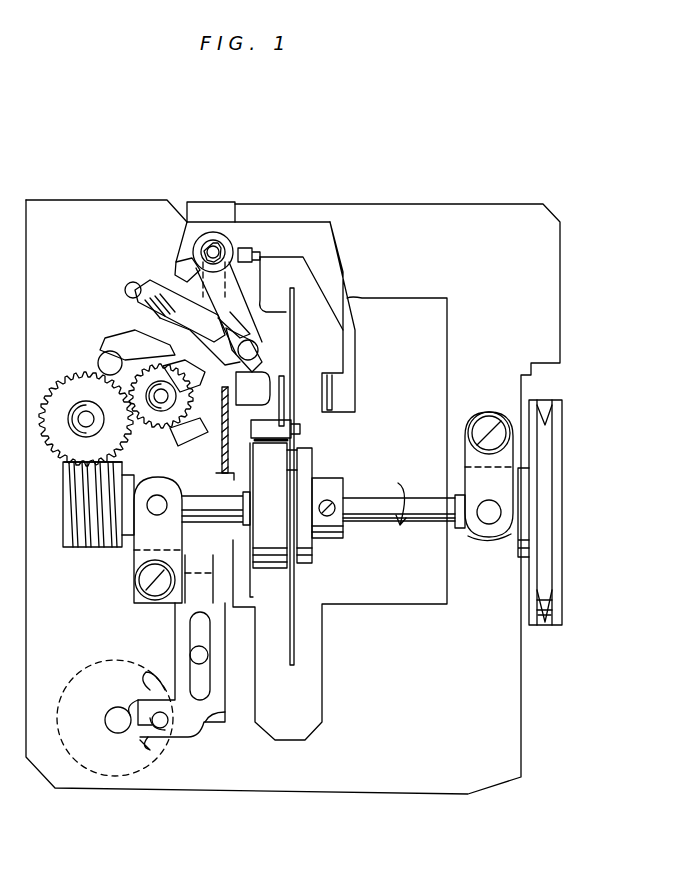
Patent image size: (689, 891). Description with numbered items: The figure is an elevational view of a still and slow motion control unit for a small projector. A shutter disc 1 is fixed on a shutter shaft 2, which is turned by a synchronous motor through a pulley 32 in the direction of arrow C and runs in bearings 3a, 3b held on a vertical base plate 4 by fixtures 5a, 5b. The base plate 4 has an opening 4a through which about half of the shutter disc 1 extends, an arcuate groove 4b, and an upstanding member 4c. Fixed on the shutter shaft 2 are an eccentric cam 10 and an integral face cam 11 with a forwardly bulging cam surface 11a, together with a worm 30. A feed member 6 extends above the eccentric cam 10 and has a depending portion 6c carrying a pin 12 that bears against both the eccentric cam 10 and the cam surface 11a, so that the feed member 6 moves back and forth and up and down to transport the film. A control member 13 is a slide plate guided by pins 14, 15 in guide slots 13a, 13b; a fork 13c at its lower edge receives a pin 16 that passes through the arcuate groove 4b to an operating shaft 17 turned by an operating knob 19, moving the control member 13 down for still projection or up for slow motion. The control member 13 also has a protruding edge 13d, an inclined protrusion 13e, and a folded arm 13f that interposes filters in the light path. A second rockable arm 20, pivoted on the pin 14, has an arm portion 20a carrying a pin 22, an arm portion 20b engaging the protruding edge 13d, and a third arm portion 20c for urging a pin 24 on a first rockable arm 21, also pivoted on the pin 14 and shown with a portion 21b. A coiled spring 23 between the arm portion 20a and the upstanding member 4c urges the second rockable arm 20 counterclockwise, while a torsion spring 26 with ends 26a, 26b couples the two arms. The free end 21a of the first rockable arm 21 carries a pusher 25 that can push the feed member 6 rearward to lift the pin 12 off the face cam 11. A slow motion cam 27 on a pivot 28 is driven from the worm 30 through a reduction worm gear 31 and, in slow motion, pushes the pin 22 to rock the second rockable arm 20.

The shutter disc 1 is at (296, 612).
The shutter shaft 2 is at (371, 503).
The bearing 3a is at (162, 478).
The bearing 3b is at (482, 542).
The base plate 4 is at (470, 204).
The opening 4a is at (430, 306).
The arcuate groove 4b is at (144, 748).
The upstanding member 4c is at (222, 455).
The fixture 5a is at (136, 556).
The fixture 5b is at (465, 478).
The feed member 6 is at (285, 425).
The depending portion 6c is at (288, 438).
The eccentric cam 10 is at (280, 568).
The face cam 11 is at (232, 580).
The cam surface 11a is at (238, 538).
The pin 12 is at (280, 440).
The control member 13 is at (214, 222).
The guide slot 13a is at (220, 238).
The guide slot 13b is at (190, 634).
The fork 13c is at (138, 702).
The protruding edge 13d is at (160, 320).
The inclined protrusion 13e is at (255, 352).
The arm 13f is at (355, 370).
The pin 14 is at (220, 248).
The pin 15 is at (205, 655).
The pin 16 is at (167, 730).
The operating shaft 17 is at (105, 720).
The operating knob 19 is at (84, 668).
The second rockable arm 20 is at (168, 300).
The arm portion 20a is at (128, 291).
The arm portion 20b is at (125, 342).
The third arm portion 20c is at (250, 322).
The first rockable arm 21 is at (258, 344).
The free end 21a is at (125, 383).
The link arm 21b is at (186, 440).
The pin 22 is at (98, 364).
The coiled spring 23 is at (145, 294).
The pin 24 is at (265, 375).
The pusher 25 is at (284, 390).
The torsion spring 26 is at (178, 265).
The end of torsion spring 26a is at (180, 225).
The end of torsion spring 26b is at (254, 255).
The slow motion cam 27 is at (166, 434).
The pivot 28 is at (90, 425).
The worm 30 is at (64, 505).
The reduction worm gear 31 is at (62, 465).
The pulley 32 is at (550, 468).
The arrow C is at (402, 530).